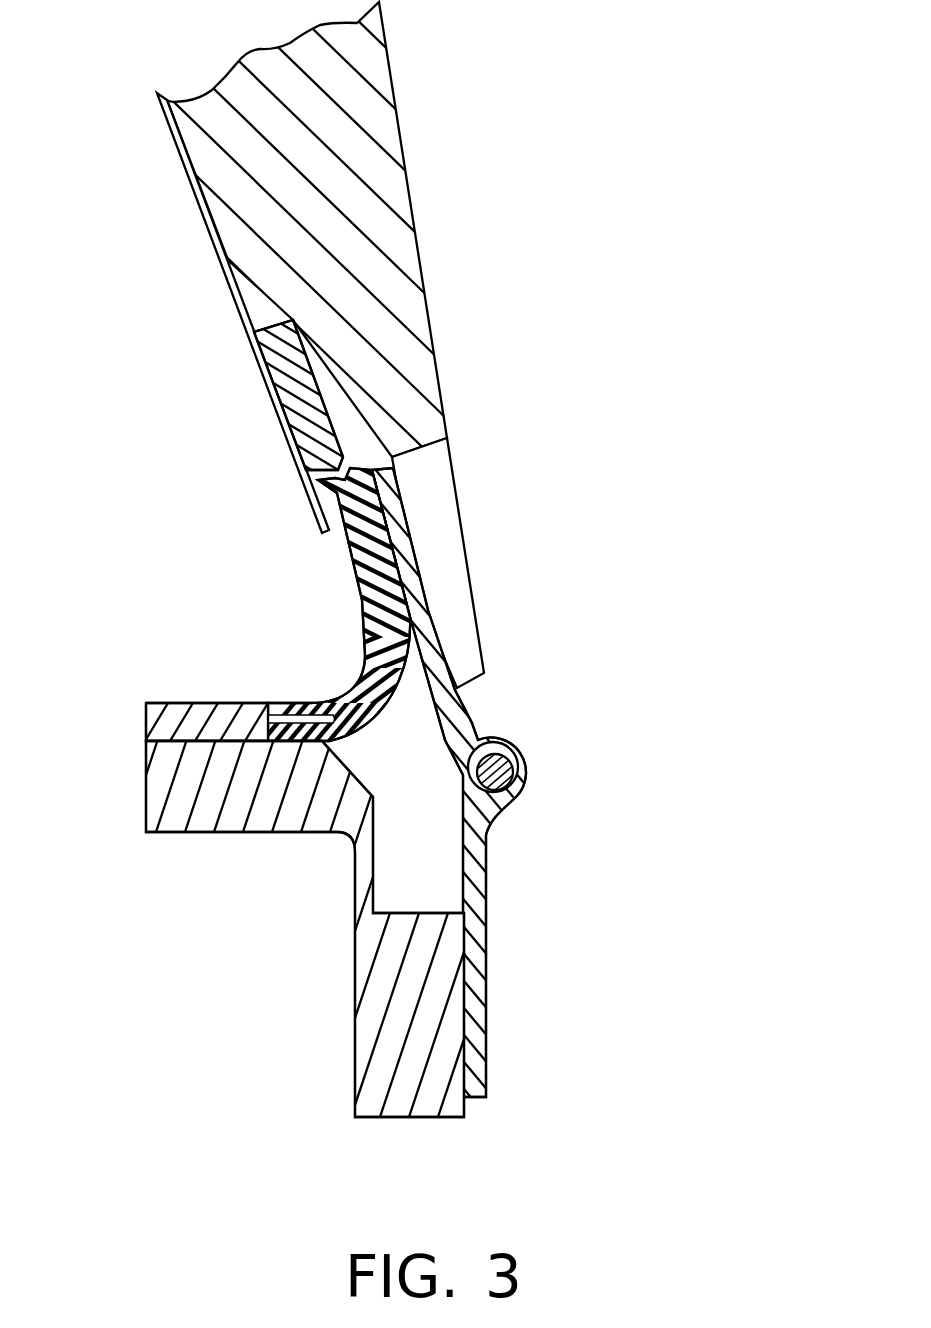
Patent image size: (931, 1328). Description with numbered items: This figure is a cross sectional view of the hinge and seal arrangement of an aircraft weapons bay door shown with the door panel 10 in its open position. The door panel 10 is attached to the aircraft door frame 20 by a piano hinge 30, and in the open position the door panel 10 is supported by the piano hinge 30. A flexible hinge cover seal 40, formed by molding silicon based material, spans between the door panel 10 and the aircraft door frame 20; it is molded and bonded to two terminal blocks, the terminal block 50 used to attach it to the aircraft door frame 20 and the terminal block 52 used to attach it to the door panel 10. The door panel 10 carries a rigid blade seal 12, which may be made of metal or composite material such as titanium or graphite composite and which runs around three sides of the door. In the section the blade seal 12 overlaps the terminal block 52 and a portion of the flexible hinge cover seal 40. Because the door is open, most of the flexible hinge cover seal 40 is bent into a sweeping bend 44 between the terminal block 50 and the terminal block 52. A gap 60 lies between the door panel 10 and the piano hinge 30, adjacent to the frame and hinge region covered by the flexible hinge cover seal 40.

The door panel 10 is at (425, 323).
The rigid blade seal 12 is at (217, 252).
The aircraft door frame 20 is at (157, 792).
The piano hinge 30 is at (482, 912).
The flexible hinge cover seal 40 is at (345, 647).
The sweeping bend 44 is at (362, 677).
The terminal block 50 is at (218, 708).
The terminal block 52 is at (303, 412).
The gap 60 is at (434, 857).